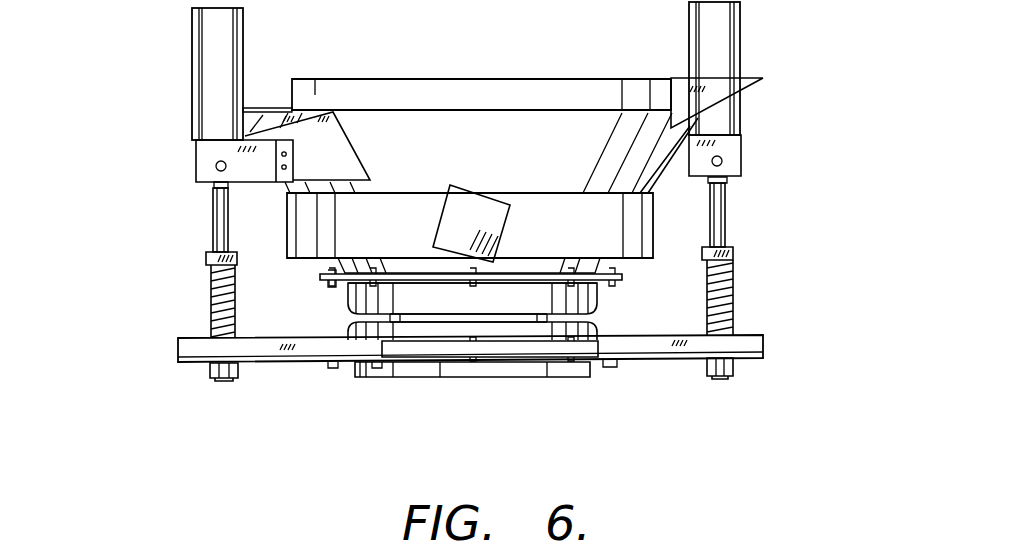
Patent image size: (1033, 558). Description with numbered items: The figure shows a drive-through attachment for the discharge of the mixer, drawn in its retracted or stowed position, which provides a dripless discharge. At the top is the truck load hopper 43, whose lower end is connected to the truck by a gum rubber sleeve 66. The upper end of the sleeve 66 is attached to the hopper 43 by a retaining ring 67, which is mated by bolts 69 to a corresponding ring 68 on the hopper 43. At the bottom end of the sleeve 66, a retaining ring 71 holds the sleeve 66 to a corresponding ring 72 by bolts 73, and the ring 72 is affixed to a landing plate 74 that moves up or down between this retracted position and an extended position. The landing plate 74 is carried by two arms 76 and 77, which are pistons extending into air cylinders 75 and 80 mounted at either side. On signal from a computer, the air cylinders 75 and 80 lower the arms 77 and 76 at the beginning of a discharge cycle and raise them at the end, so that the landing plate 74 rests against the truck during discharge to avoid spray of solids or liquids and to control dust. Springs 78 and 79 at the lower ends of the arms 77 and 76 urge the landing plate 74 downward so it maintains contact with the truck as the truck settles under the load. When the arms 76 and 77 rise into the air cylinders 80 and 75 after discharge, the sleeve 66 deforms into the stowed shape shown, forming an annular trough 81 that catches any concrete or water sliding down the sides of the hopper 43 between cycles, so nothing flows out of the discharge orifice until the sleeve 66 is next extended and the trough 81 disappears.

The truck load hopper 43 is at (432, 76).
The gum rubber sleeve 66 is at (477, 332).
The retaining ring 67 is at (622, 283).
The corresponding ring 68 is at (622, 276).
The bolts 69 is at (327, 281).
The retaining ring 71 is at (425, 340).
The corresponding ring 72 is at (441, 365).
The bolts 73 is at (615, 365).
The landing plate 74 is at (663, 362).
The air cylinder 75 is at (245, 43).
The arm 76 is at (730, 232).
The arm 77 is at (213, 222).
The spring 78 is at (732, 287).
The spring 79 is at (211, 283).
The air cylinder 80 is at (740, 33).
The annular trough 81 is at (350, 320).